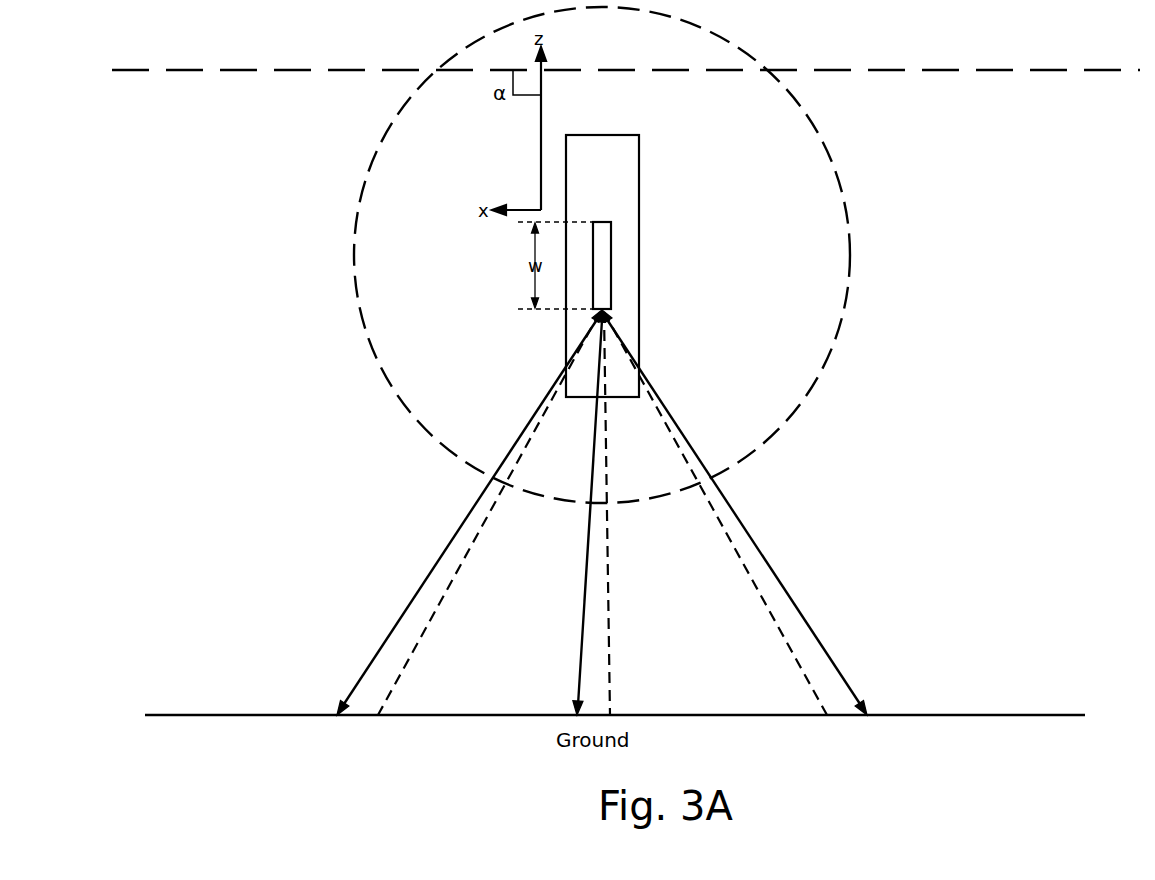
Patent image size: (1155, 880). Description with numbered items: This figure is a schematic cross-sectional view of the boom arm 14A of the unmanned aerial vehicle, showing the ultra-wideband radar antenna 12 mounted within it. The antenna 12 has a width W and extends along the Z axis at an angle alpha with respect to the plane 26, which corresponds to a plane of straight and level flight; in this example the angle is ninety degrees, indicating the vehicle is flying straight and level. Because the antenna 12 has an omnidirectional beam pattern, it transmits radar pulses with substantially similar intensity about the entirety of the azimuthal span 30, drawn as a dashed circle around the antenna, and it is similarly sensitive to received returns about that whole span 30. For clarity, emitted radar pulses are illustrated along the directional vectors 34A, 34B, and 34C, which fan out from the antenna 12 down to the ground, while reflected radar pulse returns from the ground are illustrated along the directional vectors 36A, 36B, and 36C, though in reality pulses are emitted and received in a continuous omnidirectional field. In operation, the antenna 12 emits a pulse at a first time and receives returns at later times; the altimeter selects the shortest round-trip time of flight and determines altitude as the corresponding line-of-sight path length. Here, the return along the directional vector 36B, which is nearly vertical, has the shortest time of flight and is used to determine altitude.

The plane 26 is at (287, 84).
The azimuthal span 30 is at (353, 280).
The boom arm 14A is at (650, 190).
The ultra-wideband radar antenna 12 is at (623, 263).
The directional vector 34A is at (433, 560).
The directional vector 34B is at (583, 596).
The directional vector 34C is at (760, 545).
The directional vector 36A is at (448, 587).
The directional vector 36B is at (610, 594).
The directional vector 36C is at (752, 582).